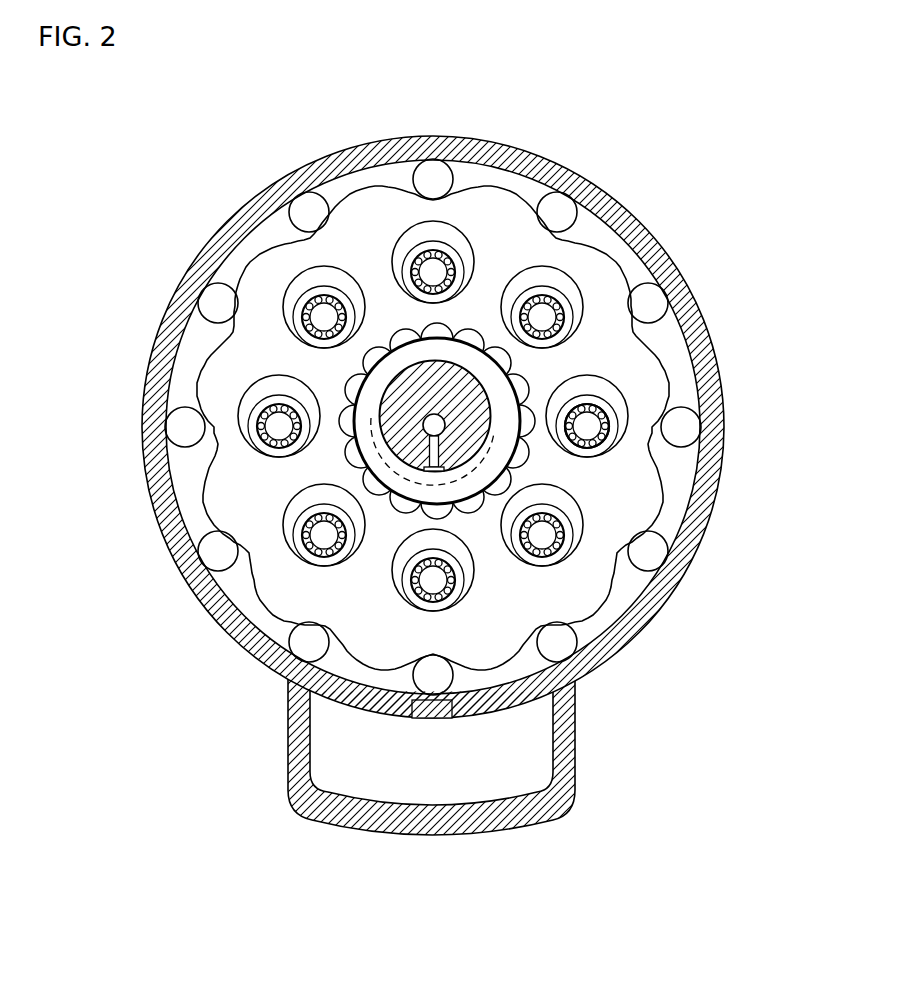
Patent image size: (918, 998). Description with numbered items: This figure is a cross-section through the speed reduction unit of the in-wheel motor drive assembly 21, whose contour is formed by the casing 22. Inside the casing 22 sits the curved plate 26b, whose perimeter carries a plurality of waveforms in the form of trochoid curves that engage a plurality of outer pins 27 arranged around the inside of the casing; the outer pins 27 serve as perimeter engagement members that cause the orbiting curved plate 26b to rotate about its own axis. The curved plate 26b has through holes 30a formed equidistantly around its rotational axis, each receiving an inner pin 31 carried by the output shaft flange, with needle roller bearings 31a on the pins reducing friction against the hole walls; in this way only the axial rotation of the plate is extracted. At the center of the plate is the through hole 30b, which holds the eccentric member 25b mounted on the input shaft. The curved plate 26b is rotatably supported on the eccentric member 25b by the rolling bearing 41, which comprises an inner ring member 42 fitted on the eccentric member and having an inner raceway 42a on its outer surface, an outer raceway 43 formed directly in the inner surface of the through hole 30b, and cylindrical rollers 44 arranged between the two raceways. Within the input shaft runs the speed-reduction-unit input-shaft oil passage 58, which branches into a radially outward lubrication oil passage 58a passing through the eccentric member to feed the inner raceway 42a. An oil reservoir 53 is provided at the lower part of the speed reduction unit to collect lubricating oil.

The in-wheel motor drive assembly 21 is at (563, 160).
The casing 22 is at (621, 211).
The eccentric member 25b is at (533, 437).
The curved plate 26b is at (227, 372).
The outer pins 27 is at (220, 302).
The through holes 30a is at (305, 280).
The through hole 30b is at (429, 398).
The inner pins 31 is at (437, 268).
The needle roller bearings 31a is at (590, 427).
The rolling bearing 41 is at (435, 398).
The inner ring member 42 is at (506, 525).
The inner raceway 42a is at (476, 462).
The outer raceway 43 is at (402, 330).
The cylindrical rollers 44 is at (507, 372).
The oil reservoir 53 is at (367, 772).
The speed-reduction-unit input-shaft oil passage 58 is at (602, 464).
The lubrication oil passage 58a is at (445, 455).